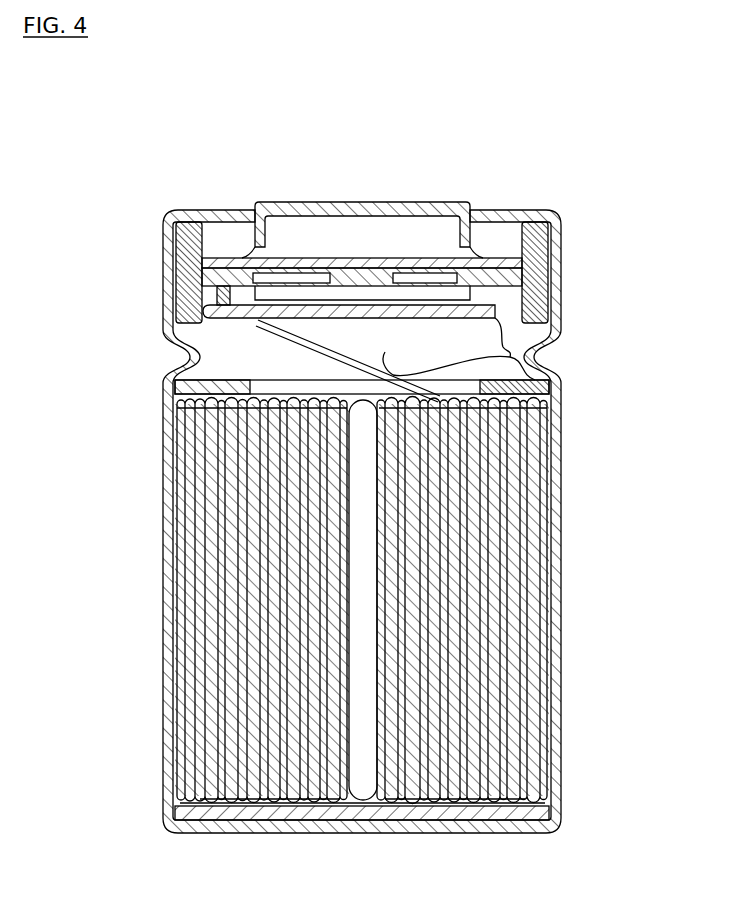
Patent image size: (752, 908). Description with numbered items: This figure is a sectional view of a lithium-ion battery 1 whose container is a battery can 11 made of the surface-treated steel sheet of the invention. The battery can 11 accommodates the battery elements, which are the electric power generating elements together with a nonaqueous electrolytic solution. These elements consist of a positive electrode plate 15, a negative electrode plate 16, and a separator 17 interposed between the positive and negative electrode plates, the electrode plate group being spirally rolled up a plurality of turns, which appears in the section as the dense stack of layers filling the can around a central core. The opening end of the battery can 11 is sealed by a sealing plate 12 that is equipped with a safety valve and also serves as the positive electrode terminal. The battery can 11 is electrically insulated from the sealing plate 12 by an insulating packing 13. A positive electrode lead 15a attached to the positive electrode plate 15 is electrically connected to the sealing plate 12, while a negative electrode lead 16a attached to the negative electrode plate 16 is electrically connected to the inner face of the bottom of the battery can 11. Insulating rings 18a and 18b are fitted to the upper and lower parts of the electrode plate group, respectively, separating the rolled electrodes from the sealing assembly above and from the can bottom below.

The lithium-ion battery 1 is at (525, 171).
The battery can 11 is at (165, 502).
The sealing plate 12 is at (298, 198).
The insulating packing 13 is at (541, 266).
The positive electrode plate 15 is at (557, 673).
The positive electrode lead 15a is at (520, 356).
The negative electrode plate 16 is at (557, 622).
The negative electrode lead 16a is at (400, 825).
The separator 17 is at (553, 545).
The insulating ring 18a is at (553, 392).
The insulating ring 18b is at (560, 808).